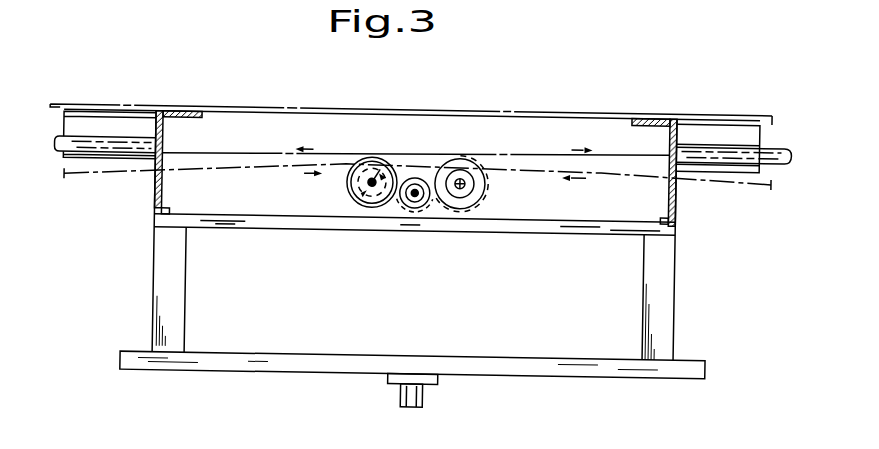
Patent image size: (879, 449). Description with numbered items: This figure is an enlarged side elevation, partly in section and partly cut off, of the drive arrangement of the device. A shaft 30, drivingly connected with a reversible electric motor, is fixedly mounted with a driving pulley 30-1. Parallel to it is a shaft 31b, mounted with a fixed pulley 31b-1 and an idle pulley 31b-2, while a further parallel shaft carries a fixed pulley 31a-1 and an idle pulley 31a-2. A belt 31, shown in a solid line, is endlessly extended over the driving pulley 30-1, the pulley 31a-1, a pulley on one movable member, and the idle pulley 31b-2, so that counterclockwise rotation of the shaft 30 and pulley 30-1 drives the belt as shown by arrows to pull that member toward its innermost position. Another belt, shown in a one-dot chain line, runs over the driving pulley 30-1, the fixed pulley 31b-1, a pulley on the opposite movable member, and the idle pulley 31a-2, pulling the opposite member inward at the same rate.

The shaft 30 is at (418, 188).
The pulley 30-1 is at (422, 202).
The belt 31 is at (373, 160).
The pulley 31a-1 is at (355, 166).
The idle pulley 31a-2 is at (355, 189).
The shaft 31b is at (461, 178).
The fixed pulley 31b-1 is at (479, 166).
The idle pulley 31b-2 is at (468, 199).